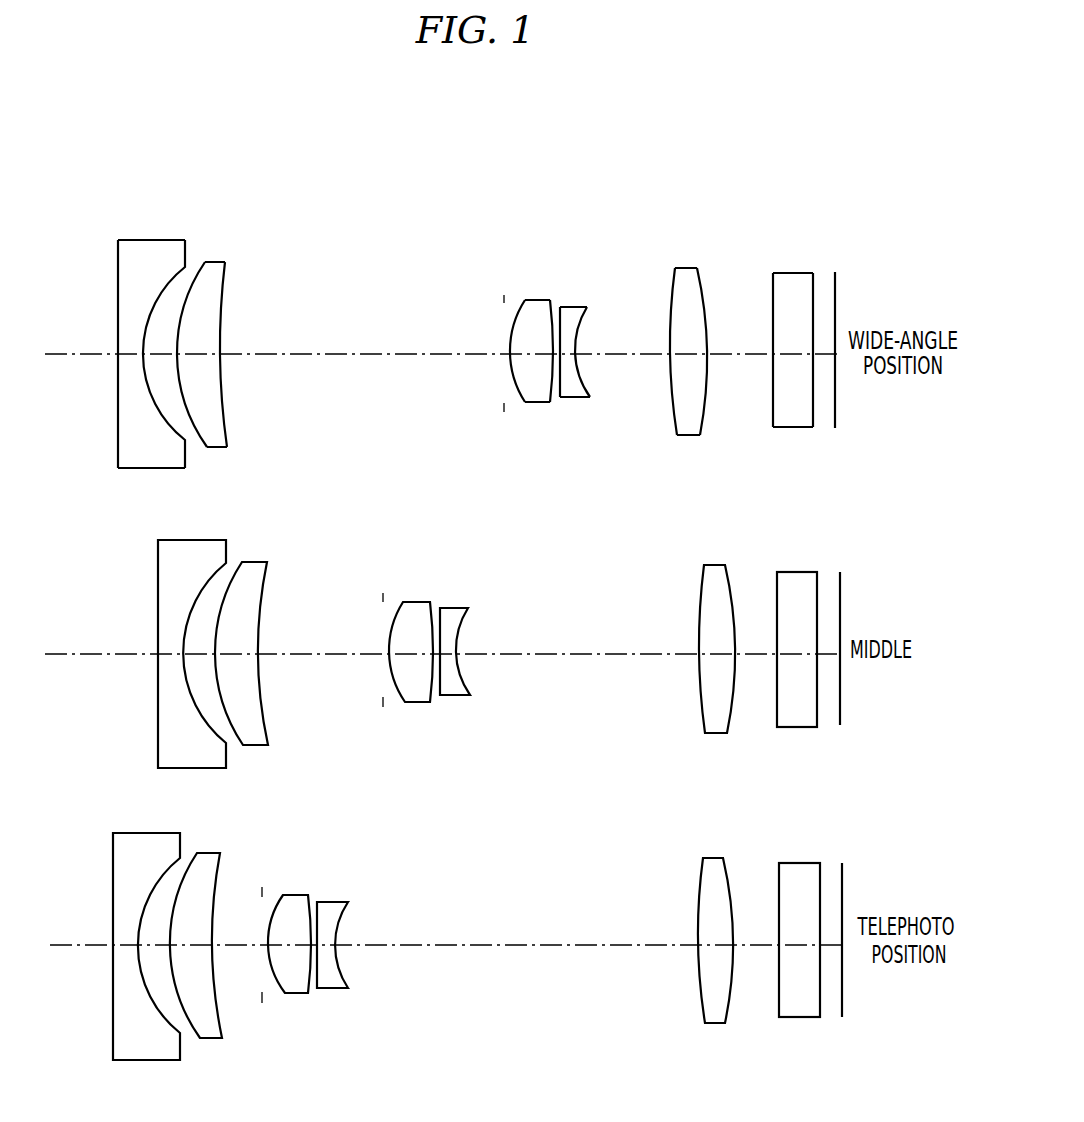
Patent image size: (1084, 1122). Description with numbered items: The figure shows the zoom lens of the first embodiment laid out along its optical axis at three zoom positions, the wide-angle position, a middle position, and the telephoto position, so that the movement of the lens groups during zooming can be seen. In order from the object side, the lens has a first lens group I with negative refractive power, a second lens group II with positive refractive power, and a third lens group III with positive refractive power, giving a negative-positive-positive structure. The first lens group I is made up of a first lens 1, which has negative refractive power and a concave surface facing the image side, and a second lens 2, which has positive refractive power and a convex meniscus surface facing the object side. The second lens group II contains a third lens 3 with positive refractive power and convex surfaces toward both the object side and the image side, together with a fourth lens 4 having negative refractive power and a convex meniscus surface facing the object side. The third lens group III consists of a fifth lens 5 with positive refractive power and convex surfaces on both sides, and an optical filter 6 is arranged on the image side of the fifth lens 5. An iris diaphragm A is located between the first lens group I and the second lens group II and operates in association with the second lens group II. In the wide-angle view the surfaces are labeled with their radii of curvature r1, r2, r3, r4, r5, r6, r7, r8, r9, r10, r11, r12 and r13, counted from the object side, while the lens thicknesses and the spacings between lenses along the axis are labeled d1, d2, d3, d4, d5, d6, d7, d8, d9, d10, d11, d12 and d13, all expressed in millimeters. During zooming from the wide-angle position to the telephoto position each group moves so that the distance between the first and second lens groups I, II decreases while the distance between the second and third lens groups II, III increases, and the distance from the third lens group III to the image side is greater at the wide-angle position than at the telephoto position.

The first lens 1 is at (175, 693).
The second lens 2 is at (252, 693).
The third lens 3 is at (417, 697).
The fourth lens 4 is at (457, 688).
The fifth lens 5 is at (717, 727).
The optical filter 6 is at (796, 717).
The iris diaphragm A is at (385, 704).
The first lens group I is at (112, 829).
The second lens group II is at (278, 884).
The third lens group III is at (714, 858).
The radius of curvature of lens surface r1 is at (118, 298).
The radius of curvature of lens surface r2 is at (160, 290).
The radius of curvature of lens surface r3 is at (205, 282).
The radius of curvature of lens surface r4 is at (225, 287).
The radius of curvature of lens surface r5 is at (503, 290).
The radius of curvature of lens surface r6 is at (521, 305).
The radius of curvature of lens surface r7 is at (551, 300).
The radius of curvature of lens surface r8 is at (561, 306).
The radius of curvature of lens surface r9 is at (590, 306).
The radius of curvature of lens surface r10 is at (675, 292).
The radius of curvature of lens surface r11 is at (705, 295).
The radius of curvature of lens surface r12 is at (773, 295).
The radius of curvature of lens surface r13 is at (813, 295).
The lens thickness or distance between lenses d1 is at (131, 357).
The lens thickness or distance between lenses d2 is at (165, 357).
The lens thickness or distance between lenses d3 is at (200, 357).
The lens thickness or distance between lenses d4 is at (342, 354).
The lens thickness or distance between lenses d5 is at (509, 358).
The lens thickness or distance between lenses d6 is at (535, 355).
The lens thickness or distance between lenses d7 is at (555, 356).
The lens thickness or distance between lenses d8 is at (567, 356).
The lens thickness or distance between lenses d9 is at (627, 354).
The lens thickness or distance between lenses d10 is at (690, 356).
The lens thickness or distance between lenses d11 is at (737, 354).
The lens thickness or distance between lenses d12 is at (790, 356).
The lens thickness or distance between lenses d13 is at (826, 354).